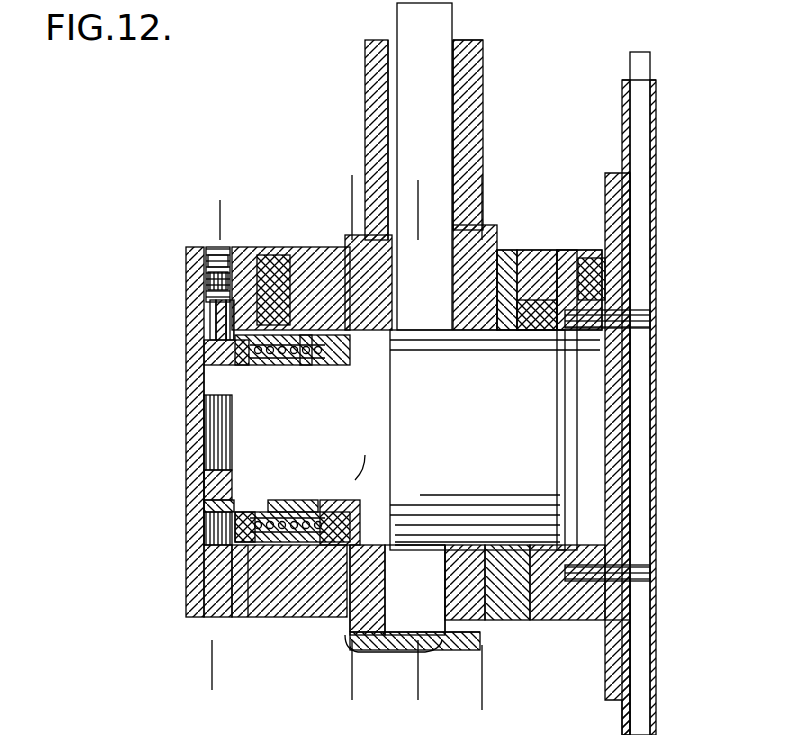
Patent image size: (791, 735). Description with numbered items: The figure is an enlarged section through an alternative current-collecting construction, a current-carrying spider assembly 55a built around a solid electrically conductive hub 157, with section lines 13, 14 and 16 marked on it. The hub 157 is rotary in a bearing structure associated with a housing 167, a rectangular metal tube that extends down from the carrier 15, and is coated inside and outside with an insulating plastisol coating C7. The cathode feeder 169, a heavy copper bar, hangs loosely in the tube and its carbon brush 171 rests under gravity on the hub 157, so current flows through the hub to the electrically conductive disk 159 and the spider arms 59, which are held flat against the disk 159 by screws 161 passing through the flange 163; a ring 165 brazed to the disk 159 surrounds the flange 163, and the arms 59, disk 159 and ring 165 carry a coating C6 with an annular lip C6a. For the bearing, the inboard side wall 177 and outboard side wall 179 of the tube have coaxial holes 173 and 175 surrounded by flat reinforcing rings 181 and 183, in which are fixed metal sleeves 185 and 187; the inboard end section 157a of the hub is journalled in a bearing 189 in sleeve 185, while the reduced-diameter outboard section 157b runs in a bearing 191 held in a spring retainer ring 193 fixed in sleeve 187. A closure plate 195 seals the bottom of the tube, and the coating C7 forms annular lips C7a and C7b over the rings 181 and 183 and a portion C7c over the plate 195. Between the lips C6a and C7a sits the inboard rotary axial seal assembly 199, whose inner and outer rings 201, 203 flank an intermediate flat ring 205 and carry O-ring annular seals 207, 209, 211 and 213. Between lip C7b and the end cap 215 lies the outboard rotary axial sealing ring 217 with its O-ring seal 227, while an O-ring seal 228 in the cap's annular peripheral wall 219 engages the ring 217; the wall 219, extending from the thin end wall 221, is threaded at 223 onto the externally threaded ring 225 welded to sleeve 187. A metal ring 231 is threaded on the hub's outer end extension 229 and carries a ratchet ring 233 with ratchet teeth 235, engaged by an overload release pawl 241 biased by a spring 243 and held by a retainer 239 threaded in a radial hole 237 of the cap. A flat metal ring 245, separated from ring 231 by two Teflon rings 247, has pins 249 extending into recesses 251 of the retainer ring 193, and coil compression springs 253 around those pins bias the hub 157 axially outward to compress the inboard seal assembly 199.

The section line 13 is at (228, 208).
The section line 14 is at (476, 202).
The carrier 15 is at (440, 197).
The section line 16 is at (362, 182).
The current-carrying spider assembly 55a is at (672, 119).
The spider arms 59 is at (650, 66).
The solid electrically conductive hub 157 is at (456, 455).
The inboard end section 157a is at (423, 549).
The reduced-diameter outboard section 157b is at (373, 459).
The electrically conductive disk 159 is at (631, 420).
The screws 161 is at (650, 320).
The flange 163 is at (628, 618).
The ring 165 is at (600, 280).
The housing 167 is at (485, 52).
The cathode feeder 169 is at (400, 24).
The carbon brush 171 is at (432, 352).
The circular hole 173 is at (448, 580).
The circular hole 175 is at (360, 580).
The inboard side wall 177 is at (470, 145).
The outboard side wall 179 is at (368, 136).
The flat reinforcing ring 181 is at (470, 650).
The flat reinforcing ring 183 is at (365, 650).
The metal sleeve 185 is at (464, 518).
The metal sleeve 187 is at (422, 518).
The bearing 189 is at (529, 518).
The bearing 191 is at (300, 500).
The spring retainer ring 193 is at (370, 512).
The closure plate 195 is at (415, 650).
The inboard rotary axial seal assembly 199 is at (525, 240).
The inner ring 201 is at (548, 620).
The outer ring 203 is at (490, 620).
The intermediate flat ring 205 is at (518, 620).
The O-ring annular seal 207 is at (545, 252).
The O-ring annular seal 209 is at (505, 250).
The O-ring annular seal 211 is at (548, 330).
The O-ring annular seal 213 is at (505, 330).
The end cap 215 is at (176, 399).
The outboard rotary axial sealing ring 217 is at (312, 247).
The annular peripheral wall 219 is at (200, 617).
The end wall 221 is at (200, 472).
The internal threading 223 is at (208, 550).
The externally threaded ring 225 is at (265, 255).
The O-ring annular seal 227 is at (325, 617).
The O-ring annular seal 228 is at (252, 617).
The outer end extension 229 is at (204, 440).
The metal ring 231 is at (208, 375).
The ratchet ring 233 is at (228, 354).
The ratchet teeth 235 is at (218, 335).
The radial hole 237 is at (218, 247).
The retainer 239 is at (208, 268).
The overload release pawl 241 is at (210, 312).
The spring 243 is at (208, 291).
The flat metal ring 245 is at (265, 512).
The flat Teflon rings 247 is at (208, 503).
The pins 249 is at (275, 365).
The recesses 251 is at (340, 365).
The coil compression springs 253 is at (305, 365).
The coating C6 is at (622, 110).
The annular lip C6a is at (575, 250).
The coating C7 is at (367, 100).
The annular lip C7a is at (450, 252).
The annular lip C7b is at (455, 270).
The coating portion C7c is at (398, 650).